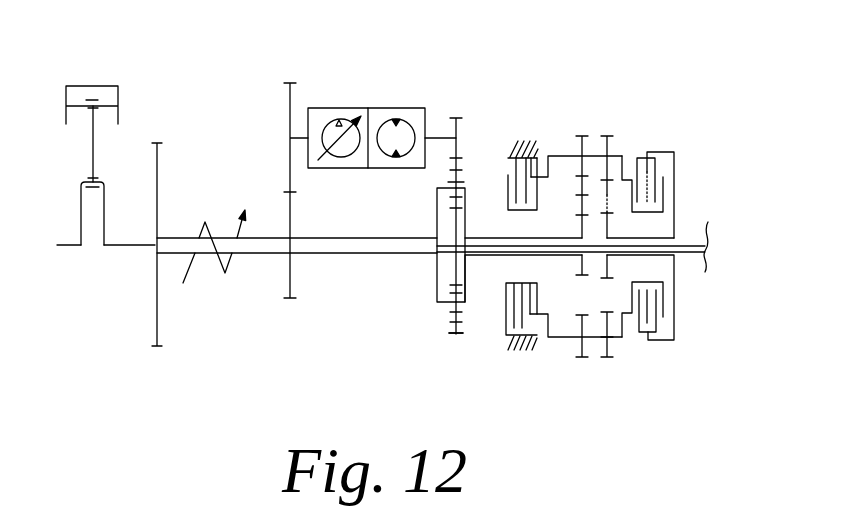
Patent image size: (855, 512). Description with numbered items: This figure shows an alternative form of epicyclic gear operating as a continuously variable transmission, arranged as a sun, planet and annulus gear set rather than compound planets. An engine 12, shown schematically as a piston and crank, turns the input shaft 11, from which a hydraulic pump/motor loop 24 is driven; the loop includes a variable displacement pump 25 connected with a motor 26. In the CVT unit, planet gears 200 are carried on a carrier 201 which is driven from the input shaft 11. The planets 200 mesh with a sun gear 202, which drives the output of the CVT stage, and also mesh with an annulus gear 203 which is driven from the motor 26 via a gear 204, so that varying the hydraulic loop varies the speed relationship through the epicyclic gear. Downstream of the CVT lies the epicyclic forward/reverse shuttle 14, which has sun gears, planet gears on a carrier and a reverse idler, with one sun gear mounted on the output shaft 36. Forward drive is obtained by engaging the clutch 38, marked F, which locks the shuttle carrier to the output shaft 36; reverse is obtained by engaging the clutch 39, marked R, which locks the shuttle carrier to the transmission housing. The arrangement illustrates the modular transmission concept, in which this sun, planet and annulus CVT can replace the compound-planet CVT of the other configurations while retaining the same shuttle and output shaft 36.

The input shaft 11 is at (275, 238).
The engine 12 is at (92, 86).
The epicyclic forward/reverse shuttle 14 is at (628, 356).
The hydraulic pump/motor loop 24 is at (445, 137).
The variable displacement pump 25 is at (345, 108).
The motor 26 is at (385, 167).
The output shaft 36 is at (687, 237).
The clutch 38 is at (645, 178).
The clutch 39 is at (526, 176).
The planet gears 200 is at (452, 314).
The carrier 201 is at (437, 277).
The sun gear 202 is at (456, 270).
The annulus gear 203 is at (452, 329).
The gear 204 is at (457, 130).